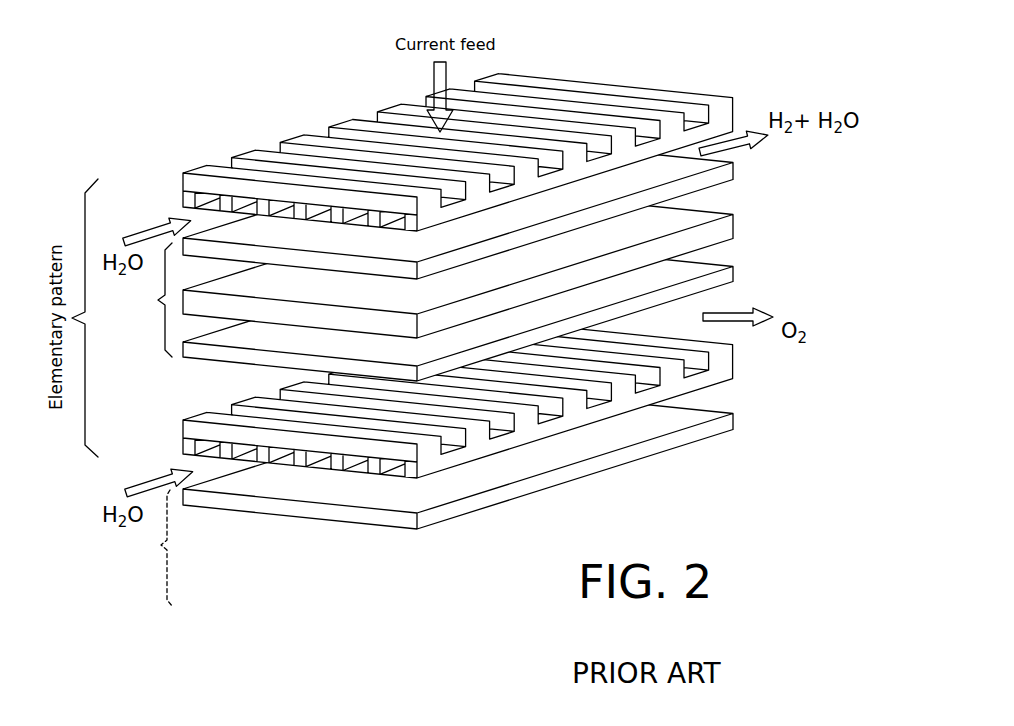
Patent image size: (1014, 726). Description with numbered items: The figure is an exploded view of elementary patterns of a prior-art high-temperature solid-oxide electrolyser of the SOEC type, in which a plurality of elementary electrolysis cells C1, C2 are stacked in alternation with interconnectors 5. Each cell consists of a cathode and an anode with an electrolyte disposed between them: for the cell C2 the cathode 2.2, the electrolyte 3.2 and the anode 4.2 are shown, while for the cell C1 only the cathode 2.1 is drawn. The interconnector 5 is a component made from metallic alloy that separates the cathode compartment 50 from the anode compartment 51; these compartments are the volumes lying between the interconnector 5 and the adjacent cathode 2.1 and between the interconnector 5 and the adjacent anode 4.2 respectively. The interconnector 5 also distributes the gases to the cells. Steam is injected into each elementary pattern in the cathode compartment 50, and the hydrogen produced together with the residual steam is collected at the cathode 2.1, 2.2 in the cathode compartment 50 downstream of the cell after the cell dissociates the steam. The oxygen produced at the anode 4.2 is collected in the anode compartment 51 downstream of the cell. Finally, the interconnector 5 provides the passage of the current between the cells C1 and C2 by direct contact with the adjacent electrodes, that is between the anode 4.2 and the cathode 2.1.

The interconnector 5 is at (198, 418).
The cathode compartment 50 is at (192, 213).
The anode compartment 51 is at (236, 384).
The cathode 2.2 is at (727, 164).
The electrolyte 3.2 is at (727, 220).
The anode 4.2 is at (727, 268).
The cathode 2.1 is at (727, 416).
The elementary electrolysis cell C1 is at (150, 548).
The elementary electrolysis cell C2 is at (145, 300).